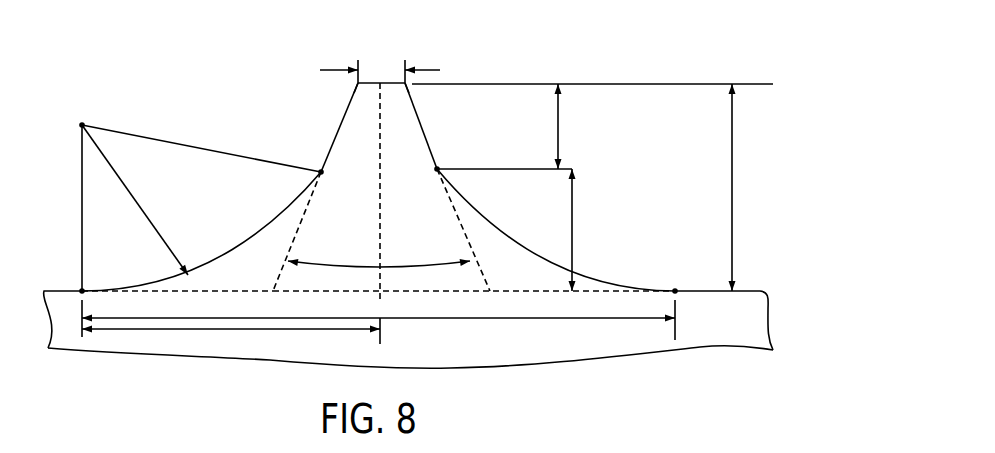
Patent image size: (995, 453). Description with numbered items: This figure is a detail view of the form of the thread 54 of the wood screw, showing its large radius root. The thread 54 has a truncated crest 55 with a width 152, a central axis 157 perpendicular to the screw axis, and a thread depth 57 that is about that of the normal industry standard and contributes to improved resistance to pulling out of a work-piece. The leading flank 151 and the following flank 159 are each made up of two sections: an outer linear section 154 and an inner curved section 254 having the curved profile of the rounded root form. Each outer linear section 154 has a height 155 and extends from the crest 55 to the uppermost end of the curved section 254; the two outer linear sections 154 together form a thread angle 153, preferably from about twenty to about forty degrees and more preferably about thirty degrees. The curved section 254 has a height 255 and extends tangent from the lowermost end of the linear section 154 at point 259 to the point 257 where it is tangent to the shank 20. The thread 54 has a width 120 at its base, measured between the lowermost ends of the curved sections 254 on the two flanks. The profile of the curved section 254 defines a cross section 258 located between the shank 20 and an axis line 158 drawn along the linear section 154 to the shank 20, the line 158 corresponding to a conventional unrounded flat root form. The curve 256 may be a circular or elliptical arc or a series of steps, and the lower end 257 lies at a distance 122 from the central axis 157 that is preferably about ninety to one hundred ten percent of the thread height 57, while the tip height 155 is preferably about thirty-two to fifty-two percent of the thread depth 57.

The shank 20 is at (707, 290).
The thread 54 is at (333, 148).
The truncated crest 55 is at (393, 82).
The thread depth 57 is at (733, 188).
The width 120 is at (483, 319).
The distance 122 is at (233, 329).
The leading flank 151 is at (428, 145).
The width 152 is at (333, 68).
The thread angle 153 is at (398, 267).
The outer linear section 154 is at (347, 110).
The height 155 is at (558, 130).
The axis 157 is at (381, 238).
The axis line 158 is at (448, 197).
The following flank 159 is at (300, 203).
The inner curved section 254 is at (272, 232).
The height 255 is at (573, 225).
The curve 256 is at (127, 187).
The point 257 is at (79, 289).
The cross section 258 is at (242, 281).
The point 259 is at (323, 174).